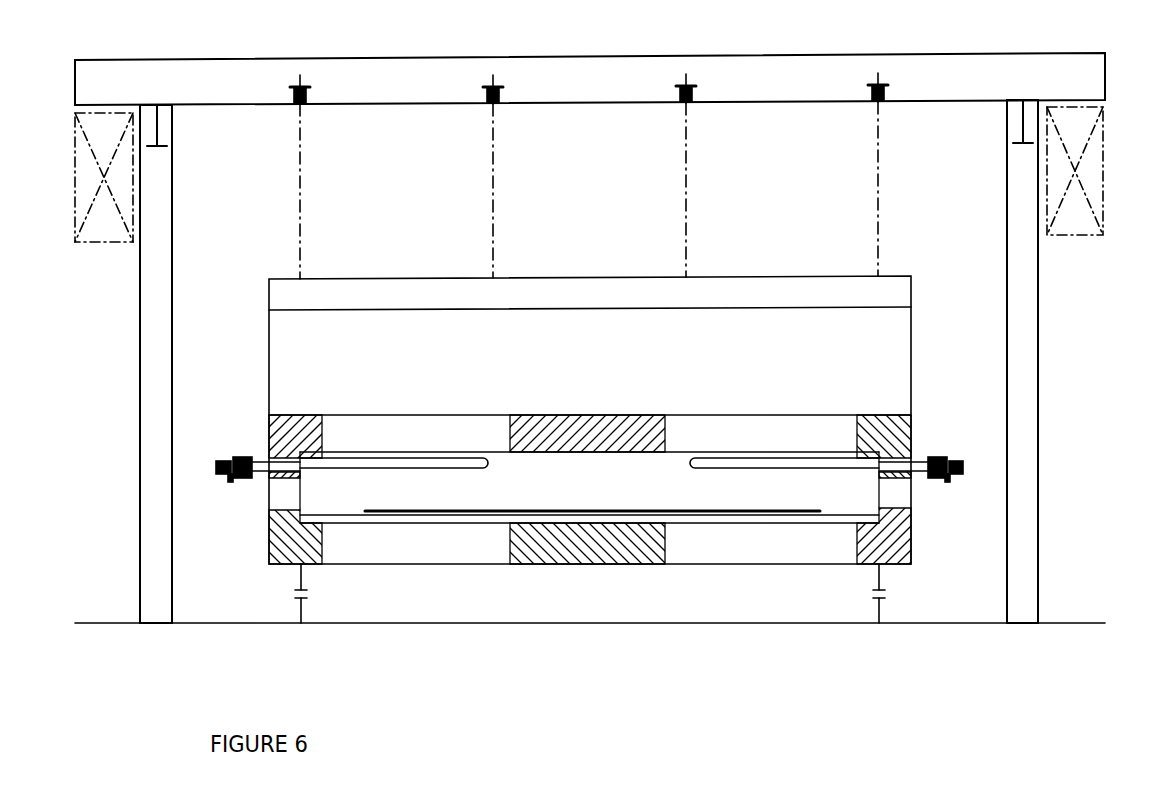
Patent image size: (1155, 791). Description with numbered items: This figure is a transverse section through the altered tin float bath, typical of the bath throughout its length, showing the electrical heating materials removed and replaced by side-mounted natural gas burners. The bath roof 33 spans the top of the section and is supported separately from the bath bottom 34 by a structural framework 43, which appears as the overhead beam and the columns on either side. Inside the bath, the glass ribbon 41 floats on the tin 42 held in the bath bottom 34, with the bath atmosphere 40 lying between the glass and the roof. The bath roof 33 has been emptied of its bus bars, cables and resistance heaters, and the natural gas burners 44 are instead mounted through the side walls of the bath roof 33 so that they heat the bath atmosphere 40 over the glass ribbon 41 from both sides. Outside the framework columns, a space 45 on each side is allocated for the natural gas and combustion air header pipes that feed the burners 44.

The bath roof 33 is at (606, 277).
The bath bottom 34 is at (268, 538).
The bath atmosphere 40 is at (589, 491).
The glass ribbon 41 is at (492, 510).
The tin 42 is at (330, 514).
The structural framework 43 is at (608, 56).
The natural gas burners 44 is at (490, 466).
The space 45 is at (115, 244).